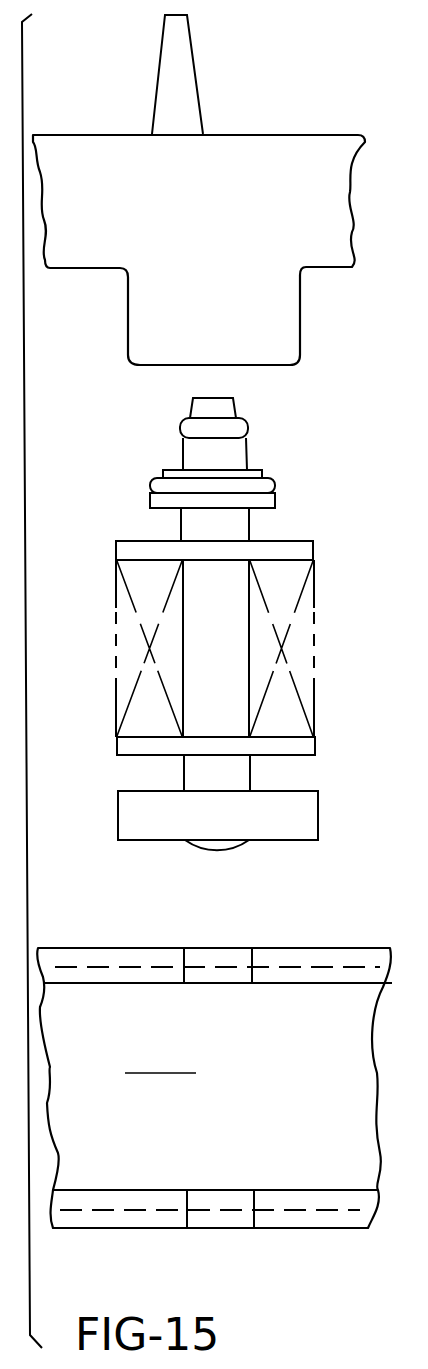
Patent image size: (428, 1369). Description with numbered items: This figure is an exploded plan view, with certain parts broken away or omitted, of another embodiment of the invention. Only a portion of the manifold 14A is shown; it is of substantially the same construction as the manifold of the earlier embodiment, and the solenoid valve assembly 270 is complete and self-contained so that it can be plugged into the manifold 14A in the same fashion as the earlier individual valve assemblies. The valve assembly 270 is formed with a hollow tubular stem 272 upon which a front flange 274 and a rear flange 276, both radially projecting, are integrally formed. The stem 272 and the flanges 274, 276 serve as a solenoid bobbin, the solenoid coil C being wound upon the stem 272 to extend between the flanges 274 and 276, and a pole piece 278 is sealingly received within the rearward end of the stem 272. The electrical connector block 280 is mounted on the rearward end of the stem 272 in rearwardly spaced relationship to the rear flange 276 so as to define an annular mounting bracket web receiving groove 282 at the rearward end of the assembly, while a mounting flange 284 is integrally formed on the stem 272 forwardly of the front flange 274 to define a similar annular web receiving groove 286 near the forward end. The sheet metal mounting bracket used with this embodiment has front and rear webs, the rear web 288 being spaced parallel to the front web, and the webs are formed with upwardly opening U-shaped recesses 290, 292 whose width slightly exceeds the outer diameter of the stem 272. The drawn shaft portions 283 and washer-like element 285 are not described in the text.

The manifold 14A is at (312, 97).
The solenoid valve assembly 270 is at (207, 737).
The hollow tubular stem 272 is at (202, 648).
The front flange 274 is at (116, 551).
The rear flange 276 is at (125, 745).
The pole piece 278 is at (224, 853).
The electrical connector block 280 is at (125, 821).
The annular mounting bracket web receiving groove 282 is at (98, 1230).
The shaft 283 is at (276, 775).
The mounting flange 284 is at (277, 500).
The washer 285 is at (273, 520).
The annular web receiving groove 286 is at (140, 950).
The rear web 288 is at (320, 1158).
The U-shaped recess 290 is at (252, 963).
The U-shaped recess 292 is at (250, 1218).
The solenoid coil C is at (297, 684).